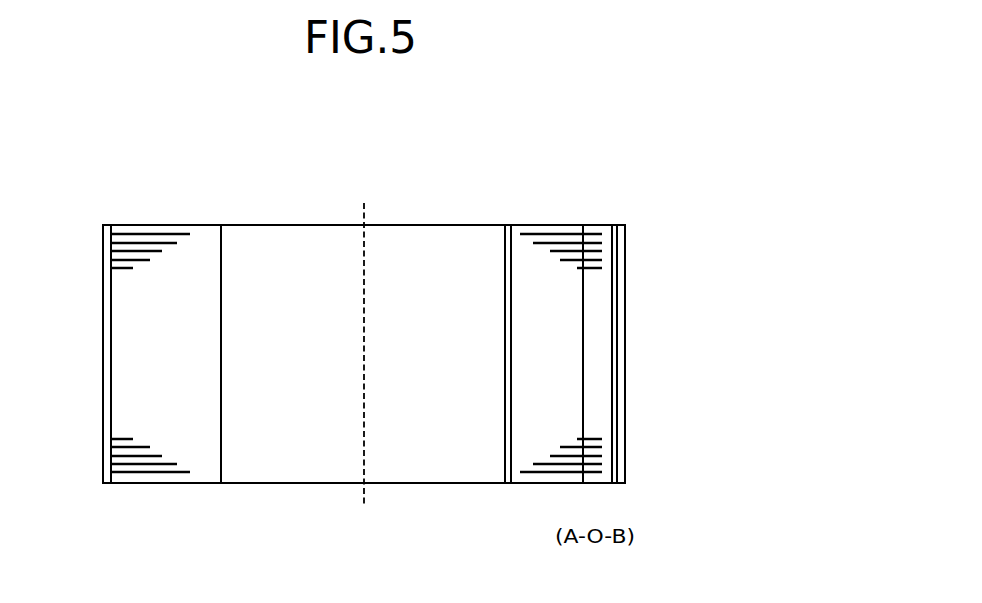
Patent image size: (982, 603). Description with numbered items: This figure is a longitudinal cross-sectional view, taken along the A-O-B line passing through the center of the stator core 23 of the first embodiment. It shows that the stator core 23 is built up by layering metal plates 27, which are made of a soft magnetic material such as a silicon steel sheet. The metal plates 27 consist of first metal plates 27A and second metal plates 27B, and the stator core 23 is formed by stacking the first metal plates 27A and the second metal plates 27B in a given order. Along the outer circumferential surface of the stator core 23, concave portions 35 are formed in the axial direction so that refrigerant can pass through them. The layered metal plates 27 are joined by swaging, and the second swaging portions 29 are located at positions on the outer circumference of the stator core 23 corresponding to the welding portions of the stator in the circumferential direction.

The stator core 23 is at (572, 123).
The metal plates 27 is at (592, 330).
The first metal plates 27A is at (592, 330).
The second metal plates 27B is at (573, 228).
The second swaging portions 29 is at (617, 272).
The concave portions 35 is at (103, 318).